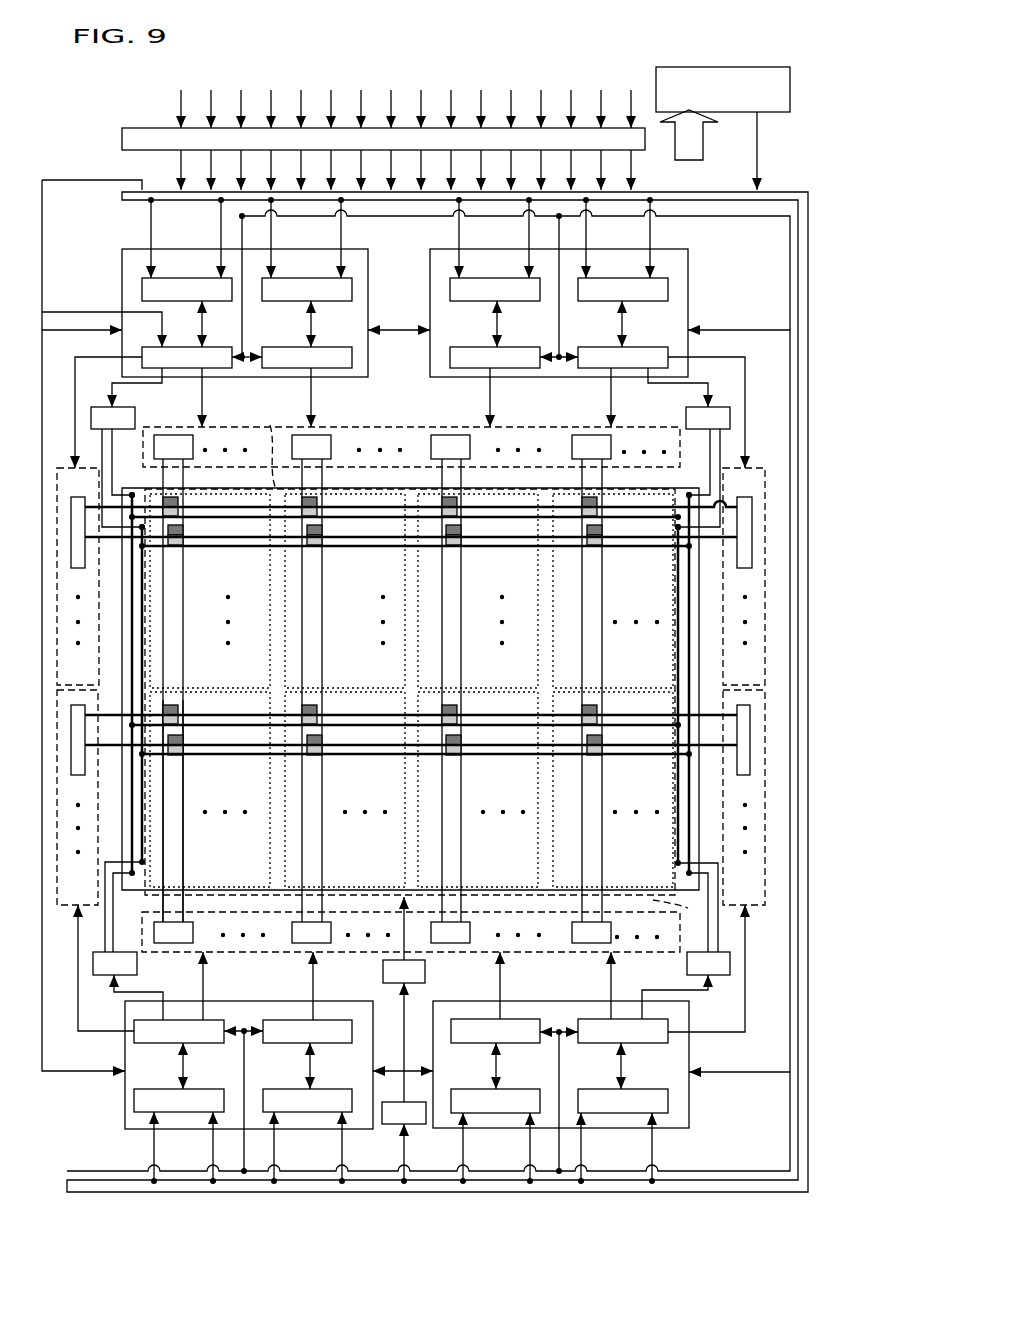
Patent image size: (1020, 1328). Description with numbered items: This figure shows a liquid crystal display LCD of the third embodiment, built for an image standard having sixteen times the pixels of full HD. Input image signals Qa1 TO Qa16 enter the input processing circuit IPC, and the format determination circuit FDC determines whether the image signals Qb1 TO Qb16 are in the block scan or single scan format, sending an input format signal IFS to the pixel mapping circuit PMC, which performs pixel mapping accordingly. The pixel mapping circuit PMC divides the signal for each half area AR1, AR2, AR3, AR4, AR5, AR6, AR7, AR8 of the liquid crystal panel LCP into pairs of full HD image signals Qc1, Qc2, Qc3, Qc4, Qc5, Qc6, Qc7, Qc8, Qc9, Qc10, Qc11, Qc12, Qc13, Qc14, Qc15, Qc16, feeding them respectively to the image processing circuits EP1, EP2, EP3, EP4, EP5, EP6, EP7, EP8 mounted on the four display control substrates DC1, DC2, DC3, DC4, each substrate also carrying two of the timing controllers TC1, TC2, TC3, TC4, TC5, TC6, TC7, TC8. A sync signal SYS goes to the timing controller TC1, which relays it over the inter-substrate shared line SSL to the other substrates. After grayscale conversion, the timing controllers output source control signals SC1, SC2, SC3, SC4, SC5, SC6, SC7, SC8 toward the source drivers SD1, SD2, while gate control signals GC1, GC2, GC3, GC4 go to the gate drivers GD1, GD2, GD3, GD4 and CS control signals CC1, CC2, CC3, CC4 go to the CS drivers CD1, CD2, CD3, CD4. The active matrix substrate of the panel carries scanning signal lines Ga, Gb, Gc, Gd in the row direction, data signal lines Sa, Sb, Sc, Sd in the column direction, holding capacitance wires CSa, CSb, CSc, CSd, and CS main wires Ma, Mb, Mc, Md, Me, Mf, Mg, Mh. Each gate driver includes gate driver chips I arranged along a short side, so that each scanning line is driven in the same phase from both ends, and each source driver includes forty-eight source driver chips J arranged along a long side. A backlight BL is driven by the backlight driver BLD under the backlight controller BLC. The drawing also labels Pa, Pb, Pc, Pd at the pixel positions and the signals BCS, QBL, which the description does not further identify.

The liquid crystal display LCD is at (90, 112).
The input processing circuit IPC is at (383, 159).
The format determination circuit FDC is at (723, 89).
The input format signal IFS is at (776, 151).
The pixel mapping circuit PMC is at (787, 172).
The sync signal SYS is at (92, 625).
The input image signals Qa1 TO Qa16 is at (406, 96).
The image signals Qb1 TO Qb16 is at (690, 146).
The image signal Qc1 is at (151, 237).
The image signal Qc2 is at (221, 237).
The image signal Qc3 is at (271, 237).
The image signal Qc4 is at (341, 237).
The image signal Qc5 is at (459, 237).
The image signal Qc6 is at (529, 237).
The image signal Qc7 is at (586, 237).
The image signal Qc8 is at (650, 237).
The image signal Qc9 is at (154, 1148).
The image signal Qc10 is at (213, 1148).
The image signal Qc11 is at (274, 1148).
The image signal Qc12 is at (342, 1148).
The image signal Qc13 is at (463, 1148).
The image signal Qc14 is at (530, 1148).
The image signal Qc15 is at (581, 1148).
The image signal Qc16 is at (652, 1148).
The display control substrate DC1 is at (370, 263).
The display control substrate DC2 is at (688, 265).
The display control substrate DC3 is at (125, 1093).
The display control substrate DC4 is at (690, 1122).
The image processing circuit EP1 is at (187, 312).
The image processing circuit EP2 is at (307, 312).
The image processing circuit EP3 is at (495, 312).
The image processing circuit EP4 is at (623, 312).
The image processing circuit EP5 is at (179, 1077).
The image processing circuit EP6 is at (307, 1077).
The image processing circuit EP7 is at (495, 1078).
The image processing circuit EP8 is at (623, 1078).
The timing controller TC1 is at (202, 357).
The timing controller TC2 is at (307, 357).
The timing controller TC3 is at (514, 357).
The timing controller TC4 is at (623, 357).
The timing controller TC5 is at (198, 1031).
The timing controller TC6 is at (307, 1031).
The timing controller TC7 is at (514, 1031).
The timing controller TC8 is at (623, 1031).
The gate control signal GC1 is at (99, 412).
The gate control signal GC2 is at (716, 412).
The gate control signal GC3 is at (96, 968).
The gate control signal GC4 is at (715, 968).
The CS control signal CC1 is at (137, 387).
The CS control signal CC2 is at (678, 387).
The CS control signal CC3 is at (138, 997).
The CS control signal CC4 is at (675, 997).
The source control signal SC1 is at (201, 397).
The source control signal SC2 is at (311, 397).
The source control signal SC3 is at (490, 397).
The source control signal SC4 is at (612, 397).
The source control signal SC5 is at (203, 986).
The source control signal SC6 is at (313, 986).
The source control signal SC7 is at (500, 985).
The source control signal SC8 is at (612, 985).
The CS driver CD1 is at (118, 467).
The CS driver CD2 is at (702, 467).
The CS driver CD3 is at (117, 918).
The CS driver CD4 is at (704, 919).
The gate driver GD1 is at (78, 576).
The gate driver GD2 is at (744, 576).
The gate driver GD3 is at (77, 797).
The gate driver GD4 is at (744, 797).
The source driver SD1 is at (411, 447).
The source driver SD2 is at (411, 931).
The backlight BL is at (482, 669).
The liquid crystal panel LCP is at (366, 488).
The source driver chip J is at (382, 689).
The gate driver chip I is at (411, 636).
The pixel Pa is at (182, 507).
The pixel Pb is at (184, 540).
The pixel Pc is at (181, 710).
The pixel Pd is at (186, 746).
The scanning signal line Ga is at (238, 510).
The scanning signal line Gb is at (220, 540).
The scanning signal line Gc is at (242, 714).
The scanning signal line Gd is at (241, 746).
The data signal line Sa is at (165, 628).
The data signal line Sb is at (185, 652).
The data signal line Sc is at (165, 828).
The data signal line Sd is at (185, 847).
The holding capacitance wire CSa is at (357, 518).
The holding capacitance wire CSb is at (342, 548).
The holding capacitance wire CSc is at (340, 724).
The holding capacitance wire CSd is at (343, 755).
The CS main wire Ma is at (132, 630).
The CS main wire Mb is at (142, 665).
The CS main wire Mc is at (678, 567).
The CS main wire Md is at (689, 590).
The CS main wire Me is at (132, 817).
The CS main wire Mf is at (142, 845).
The CS main wire Mg is at (678, 775).
The CS main wire Mh is at (689, 797).
The left half of local area 1 AR1 is at (210, 592).
The right half of local area 1 AR2 is at (345, 592).
The left half of local area 2 AR3 is at (478, 592).
The right half of local area 2 AR4 is at (613, 592).
The left half of local area 3 AR5 is at (210, 789).
The right half of local area 3 AR6 is at (345, 789).
The left half of local area 4 AR7 is at (478, 789).
The right half of local area 4 AR8 is at (613, 789).
The backlight driver BLD is at (404, 940).
The backlight control signal BCS is at (402, 1042).
The backlight controller BLC is at (404, 1112).
The backlight data QBL is at (405, 1154).
The inter-substrate shared line SSL is at (80, 1162).